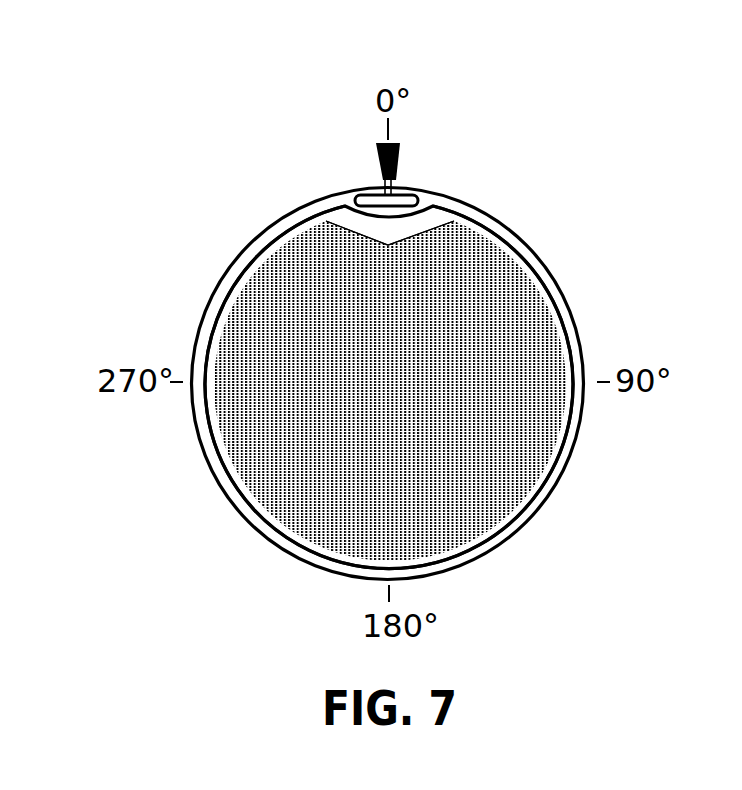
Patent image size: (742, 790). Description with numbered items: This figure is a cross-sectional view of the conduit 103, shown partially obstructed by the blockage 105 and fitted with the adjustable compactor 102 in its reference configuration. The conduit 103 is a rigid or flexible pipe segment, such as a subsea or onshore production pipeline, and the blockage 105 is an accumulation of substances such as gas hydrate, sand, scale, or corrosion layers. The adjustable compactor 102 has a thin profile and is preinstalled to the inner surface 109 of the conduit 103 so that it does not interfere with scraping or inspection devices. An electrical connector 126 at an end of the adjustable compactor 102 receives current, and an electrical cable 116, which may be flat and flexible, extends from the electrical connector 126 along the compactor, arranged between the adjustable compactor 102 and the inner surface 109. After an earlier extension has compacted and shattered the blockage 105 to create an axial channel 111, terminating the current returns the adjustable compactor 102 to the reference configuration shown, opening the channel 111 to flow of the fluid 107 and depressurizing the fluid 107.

The adjustable compactor 102 is at (437, 207).
The conduit 103 is at (570, 317).
The blockage 105 is at (428, 383).
The fluid 107 is at (272, 222).
The inner surface 109 is at (228, 461).
The channel 111 is at (367, 237).
The electrical cable 116 is at (414, 194).
The electrical connector 126 is at (377, 155).